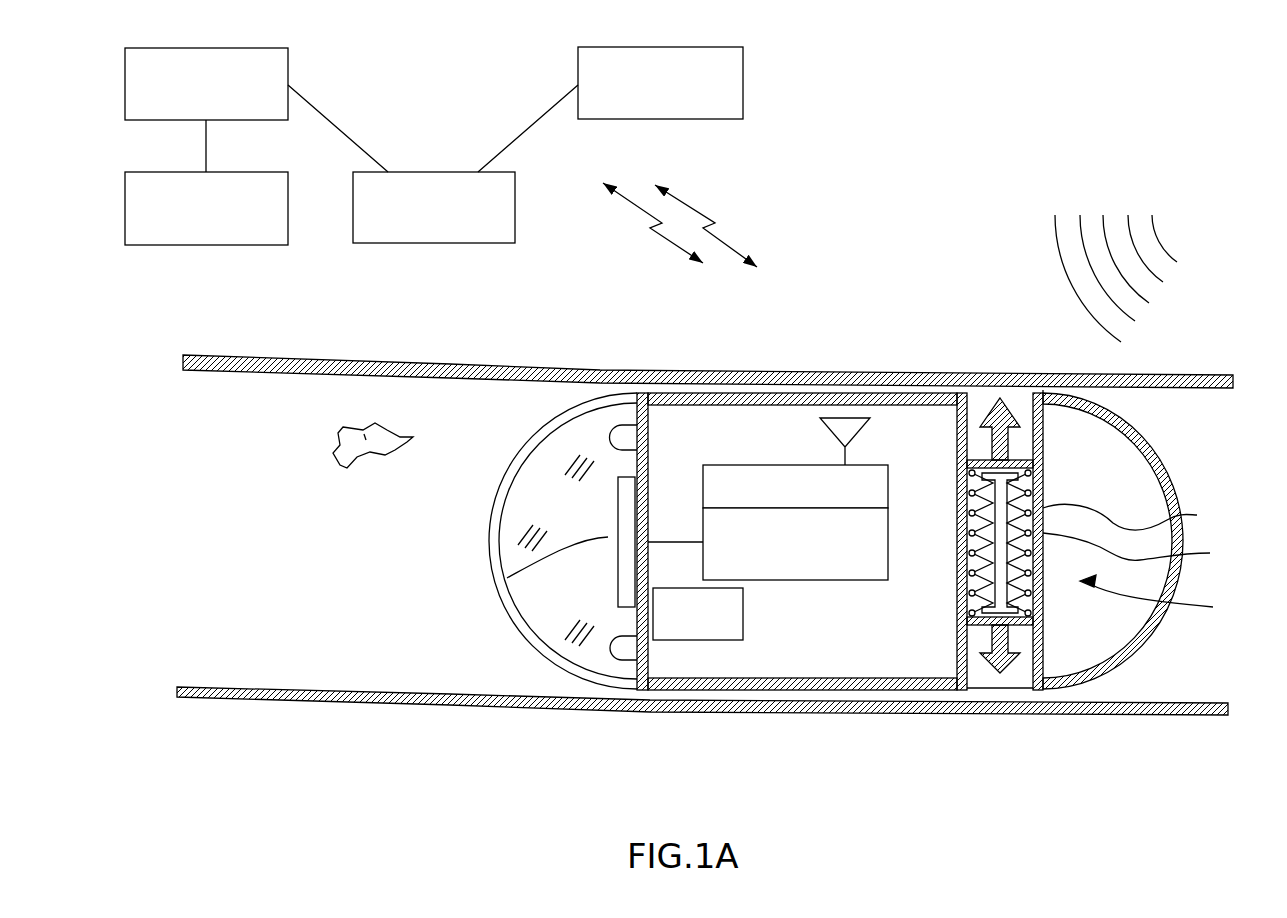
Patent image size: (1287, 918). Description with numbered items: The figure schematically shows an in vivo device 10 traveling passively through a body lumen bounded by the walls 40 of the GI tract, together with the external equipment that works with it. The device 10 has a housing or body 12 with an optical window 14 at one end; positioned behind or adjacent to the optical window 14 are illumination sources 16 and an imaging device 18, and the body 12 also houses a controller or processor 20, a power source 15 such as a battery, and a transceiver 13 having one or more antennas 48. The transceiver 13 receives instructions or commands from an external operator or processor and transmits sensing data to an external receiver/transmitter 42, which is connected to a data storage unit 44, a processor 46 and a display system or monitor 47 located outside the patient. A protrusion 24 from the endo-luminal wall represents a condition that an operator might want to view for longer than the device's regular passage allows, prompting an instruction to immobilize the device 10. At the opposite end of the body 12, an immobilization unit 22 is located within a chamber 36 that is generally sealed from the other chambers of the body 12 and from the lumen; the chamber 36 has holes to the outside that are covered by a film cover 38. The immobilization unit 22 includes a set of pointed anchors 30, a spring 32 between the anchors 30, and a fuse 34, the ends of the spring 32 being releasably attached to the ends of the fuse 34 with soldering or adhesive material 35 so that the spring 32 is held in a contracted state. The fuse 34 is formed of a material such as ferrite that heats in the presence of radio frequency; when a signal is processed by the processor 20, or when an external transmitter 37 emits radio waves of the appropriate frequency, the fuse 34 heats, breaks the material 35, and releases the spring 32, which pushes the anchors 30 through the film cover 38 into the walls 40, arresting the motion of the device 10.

The in vivo device 10 is at (840, 386).
The housing or body 12 is at (703, 372).
The transceiver 13 is at (703, 487).
The optical window 14 is at (497, 503).
The power source 15 is at (678, 641).
The illumination sources 16 is at (609, 437).
The imaging device 18 is at (507, 578).
The controller or processor 20 is at (803, 580).
The immobilization unit 22 is at (1162, 597).
The protrusion 24 is at (375, 427).
The anchors 30 is at (985, 405).
The spring 32 is at (1134, 517).
The fuse 34 is at (1141, 550).
The soldering or adhesive material 35 is at (1043, 608).
The chamber 36 is at (985, 640).
The external transmitter 37 is at (1183, 222).
The film cover 38 is at (1020, 375).
The walls of the GI tract 40 is at (1162, 388).
The receiver/transmitter 42 is at (515, 204).
The data storage unit 44 is at (670, 47).
The processor 46 is at (215, 48).
The display system or monitor 47 is at (222, 172).
The antennas 48 is at (873, 430).